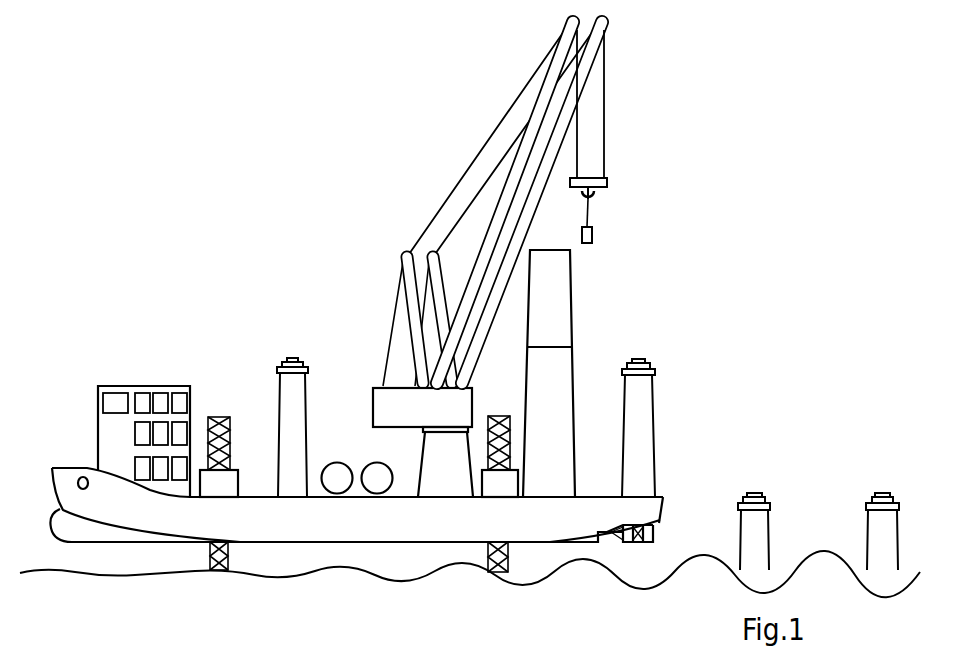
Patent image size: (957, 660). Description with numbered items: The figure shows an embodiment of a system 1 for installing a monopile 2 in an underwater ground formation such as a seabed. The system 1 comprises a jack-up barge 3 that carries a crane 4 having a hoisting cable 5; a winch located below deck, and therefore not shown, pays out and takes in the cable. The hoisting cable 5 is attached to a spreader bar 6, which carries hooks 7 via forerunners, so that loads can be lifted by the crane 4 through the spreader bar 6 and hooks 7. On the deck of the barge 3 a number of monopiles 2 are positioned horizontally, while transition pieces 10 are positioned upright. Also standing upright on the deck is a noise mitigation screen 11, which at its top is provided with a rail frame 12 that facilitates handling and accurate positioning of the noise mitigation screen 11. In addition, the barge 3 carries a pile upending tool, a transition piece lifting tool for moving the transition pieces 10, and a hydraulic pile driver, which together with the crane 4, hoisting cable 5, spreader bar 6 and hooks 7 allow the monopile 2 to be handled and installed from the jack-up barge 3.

The system 1 is at (748, 142).
The monopile 2 is at (377, 483).
The jack-up barge 3 is at (420, 528).
The crane 4 is at (402, 262).
The hoisting cable 5 is at (605, 88).
The spreader bar 6 is at (607, 181).
The hooks 7 is at (592, 234).
The transition piece 10 is at (290, 356).
The noise mitigation screen 11 is at (586, 373).
The rail frame 12 is at (560, 292).